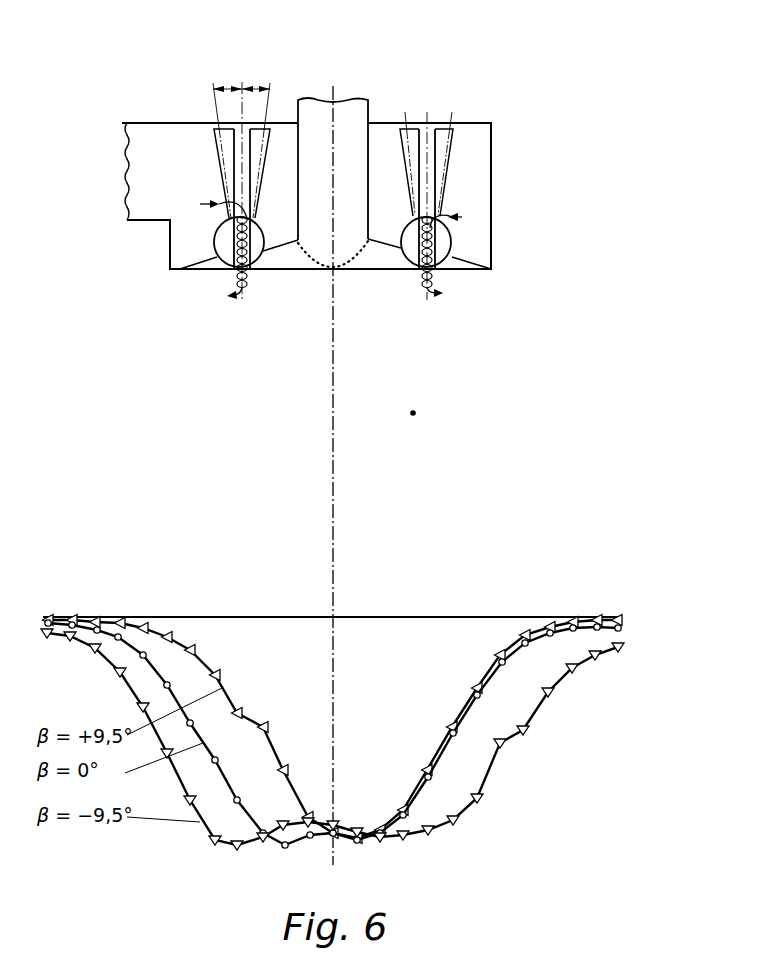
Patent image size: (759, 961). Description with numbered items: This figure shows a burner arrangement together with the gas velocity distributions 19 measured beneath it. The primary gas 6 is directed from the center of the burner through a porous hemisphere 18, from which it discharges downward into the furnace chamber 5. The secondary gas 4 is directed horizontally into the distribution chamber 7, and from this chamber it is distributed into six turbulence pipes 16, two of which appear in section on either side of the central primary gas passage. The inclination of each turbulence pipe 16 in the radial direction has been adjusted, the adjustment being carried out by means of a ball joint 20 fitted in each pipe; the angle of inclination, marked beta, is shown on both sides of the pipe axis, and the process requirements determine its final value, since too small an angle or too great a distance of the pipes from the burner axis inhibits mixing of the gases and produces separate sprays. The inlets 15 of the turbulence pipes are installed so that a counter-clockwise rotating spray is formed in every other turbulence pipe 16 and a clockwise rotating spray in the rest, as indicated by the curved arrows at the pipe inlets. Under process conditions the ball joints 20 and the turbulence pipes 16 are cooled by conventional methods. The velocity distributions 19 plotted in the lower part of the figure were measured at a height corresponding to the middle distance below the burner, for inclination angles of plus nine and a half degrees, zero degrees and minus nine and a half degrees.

The secondary gas 4 is at (108, 170).
The furnace chamber 5 is at (413, 413).
The primary gas 6 is at (333, 80).
The distribution chamber 7 is at (477, 173).
The inlets of the turbulence pipes 15 is at (218, 155).
The turbulence pipe 16 is at (248, 255).
The porous hemisphere 18 is at (355, 263).
The velocity distributions 19 is at (560, 680).
The ball joint 20 is at (225, 243).